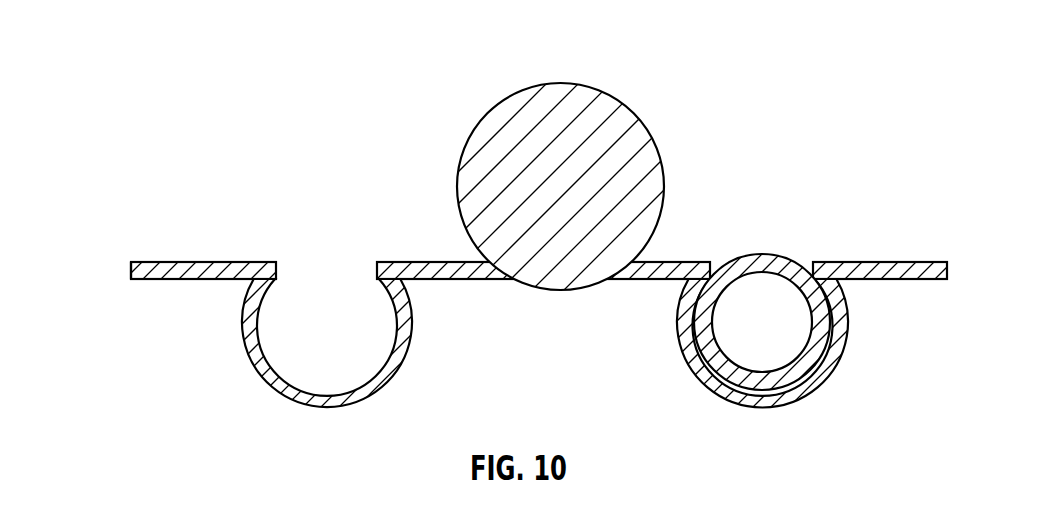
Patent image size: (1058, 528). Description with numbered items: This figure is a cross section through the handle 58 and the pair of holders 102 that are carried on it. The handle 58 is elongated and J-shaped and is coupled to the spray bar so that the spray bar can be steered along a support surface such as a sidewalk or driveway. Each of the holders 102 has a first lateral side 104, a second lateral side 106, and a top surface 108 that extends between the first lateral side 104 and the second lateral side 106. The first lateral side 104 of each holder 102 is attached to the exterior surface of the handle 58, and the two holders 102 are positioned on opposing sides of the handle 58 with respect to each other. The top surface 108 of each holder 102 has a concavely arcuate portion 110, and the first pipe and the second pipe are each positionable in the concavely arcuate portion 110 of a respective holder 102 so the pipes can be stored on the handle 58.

The handle 58 is at (566, 83).
The holders 102 is at (160, 262).
The first lateral side 104 is at (480, 280).
The second lateral side 106 is at (131, 268).
The top surface 108 is at (218, 265).
The concavely arcuate portion 110 is at (332, 372).